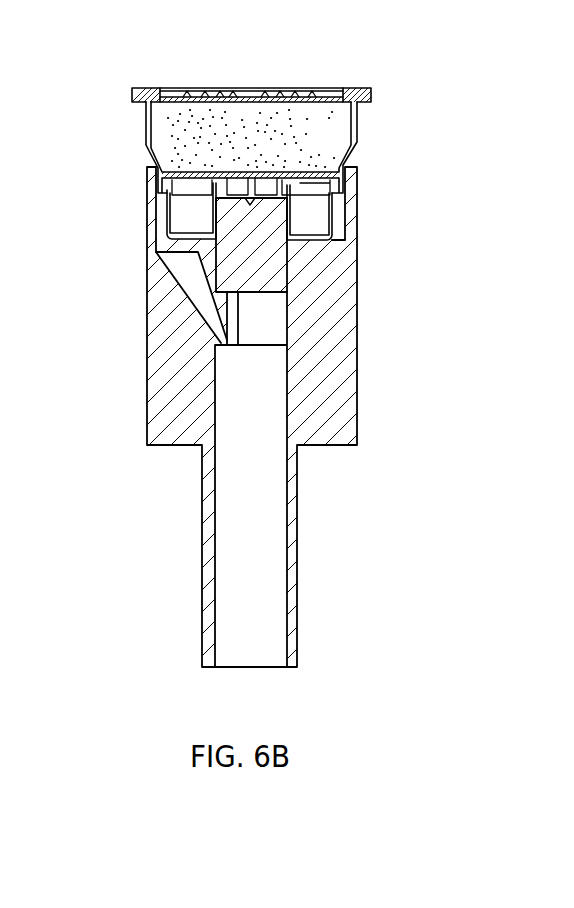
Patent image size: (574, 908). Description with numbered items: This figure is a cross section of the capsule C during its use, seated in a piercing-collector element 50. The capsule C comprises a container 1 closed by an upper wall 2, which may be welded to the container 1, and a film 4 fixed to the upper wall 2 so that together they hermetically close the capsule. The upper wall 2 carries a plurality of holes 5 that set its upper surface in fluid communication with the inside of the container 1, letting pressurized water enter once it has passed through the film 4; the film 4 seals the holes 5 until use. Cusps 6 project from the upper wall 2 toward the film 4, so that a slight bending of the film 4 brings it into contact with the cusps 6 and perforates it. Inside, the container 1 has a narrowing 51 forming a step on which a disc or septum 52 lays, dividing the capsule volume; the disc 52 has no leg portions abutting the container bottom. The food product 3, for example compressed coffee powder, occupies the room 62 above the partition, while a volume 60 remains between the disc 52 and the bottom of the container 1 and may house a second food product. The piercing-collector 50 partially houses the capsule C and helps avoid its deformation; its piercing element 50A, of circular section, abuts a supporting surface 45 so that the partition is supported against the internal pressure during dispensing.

The container 1 is at (353, 139).
The upper wall 2 is at (362, 94).
The food product 3 is at (252, 128).
The film 4 is at (171, 92).
The holes 5 is at (322, 101).
The cusps 6 is at (220, 96).
The supporting surface 45 is at (244, 216).
The piercing-collector element 50 is at (158, 378).
The piercing element 50A is at (267, 220).
The narrowing 51 is at (333, 200).
The disc 52 is at (160, 190).
The volume 60 is at (188, 215).
The room 62 is at (253, 138).
The capsule C is at (130, 148).